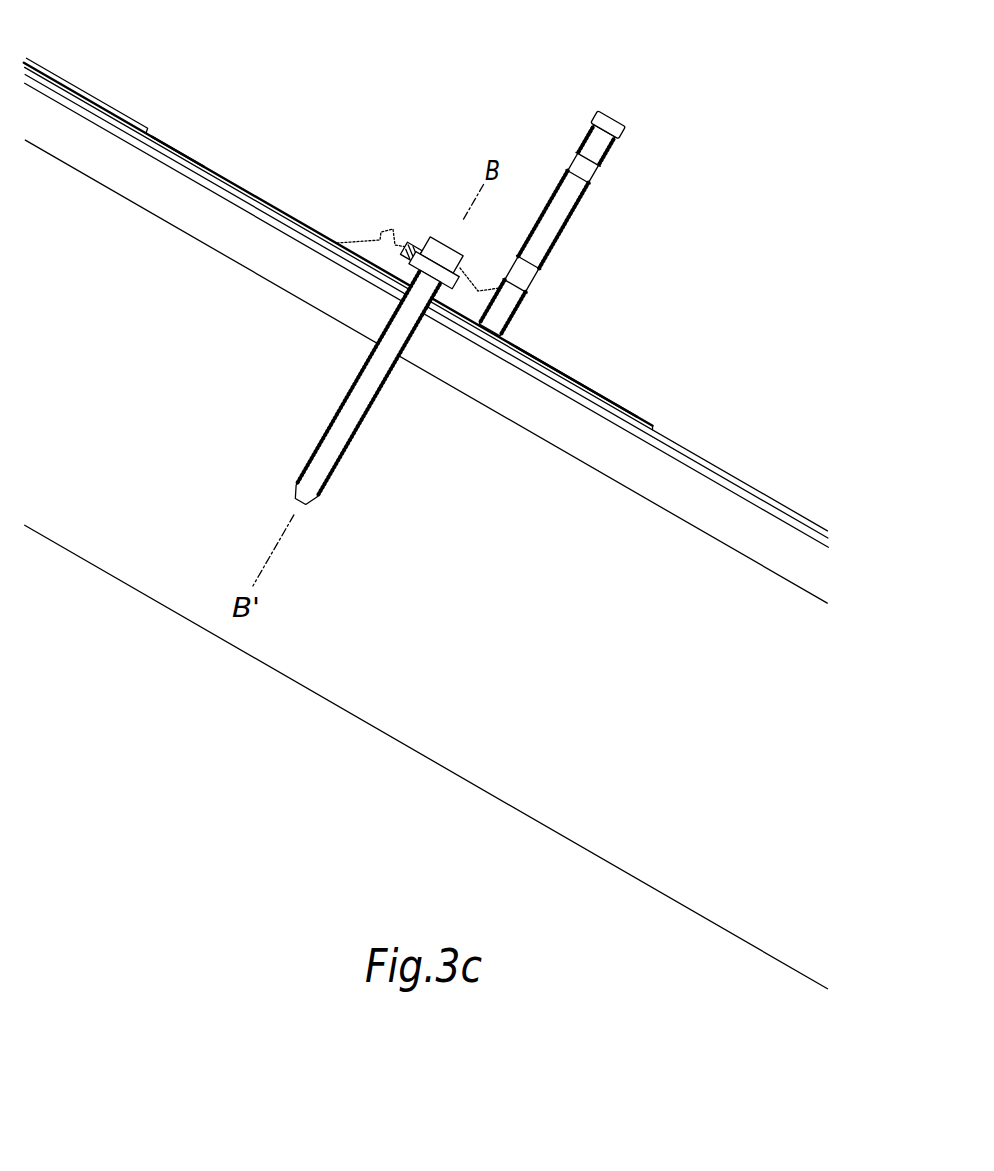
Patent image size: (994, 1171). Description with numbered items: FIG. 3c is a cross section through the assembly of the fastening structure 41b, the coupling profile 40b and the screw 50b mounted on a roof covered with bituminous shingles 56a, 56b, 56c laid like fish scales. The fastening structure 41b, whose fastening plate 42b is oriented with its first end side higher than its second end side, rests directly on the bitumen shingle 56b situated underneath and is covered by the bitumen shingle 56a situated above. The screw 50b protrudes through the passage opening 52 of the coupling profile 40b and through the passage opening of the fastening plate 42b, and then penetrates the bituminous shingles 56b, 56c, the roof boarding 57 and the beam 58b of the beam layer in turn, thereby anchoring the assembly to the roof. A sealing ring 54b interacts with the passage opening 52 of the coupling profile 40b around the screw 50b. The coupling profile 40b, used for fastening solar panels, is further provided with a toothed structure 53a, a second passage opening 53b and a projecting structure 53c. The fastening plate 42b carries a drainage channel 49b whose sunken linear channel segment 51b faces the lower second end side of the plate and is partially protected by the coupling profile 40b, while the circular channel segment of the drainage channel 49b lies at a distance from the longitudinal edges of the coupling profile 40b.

The coupling profile 40b is at (652, 130).
The fastening structure 41b is at (209, 158).
The fastening plate 42b is at (265, 200).
The drainage channel 49b is at (350, 268).
The screw 50b is at (357, 410).
The linear channel segment 51b is at (533, 360).
The passage opening 52 is at (443, 293).
The toothed structure 53a is at (587, 127).
The second passage opening 53b is at (555, 218).
The projecting structure 53c is at (390, 227).
The sealing ring 54b is at (408, 247).
The bituminous shingle 56a is at (98, 98).
The bituminous shingle 56b is at (618, 410).
The bituminous shingle 56c is at (763, 500).
The roof boarding 57 is at (675, 494).
The beam 58b is at (555, 632).